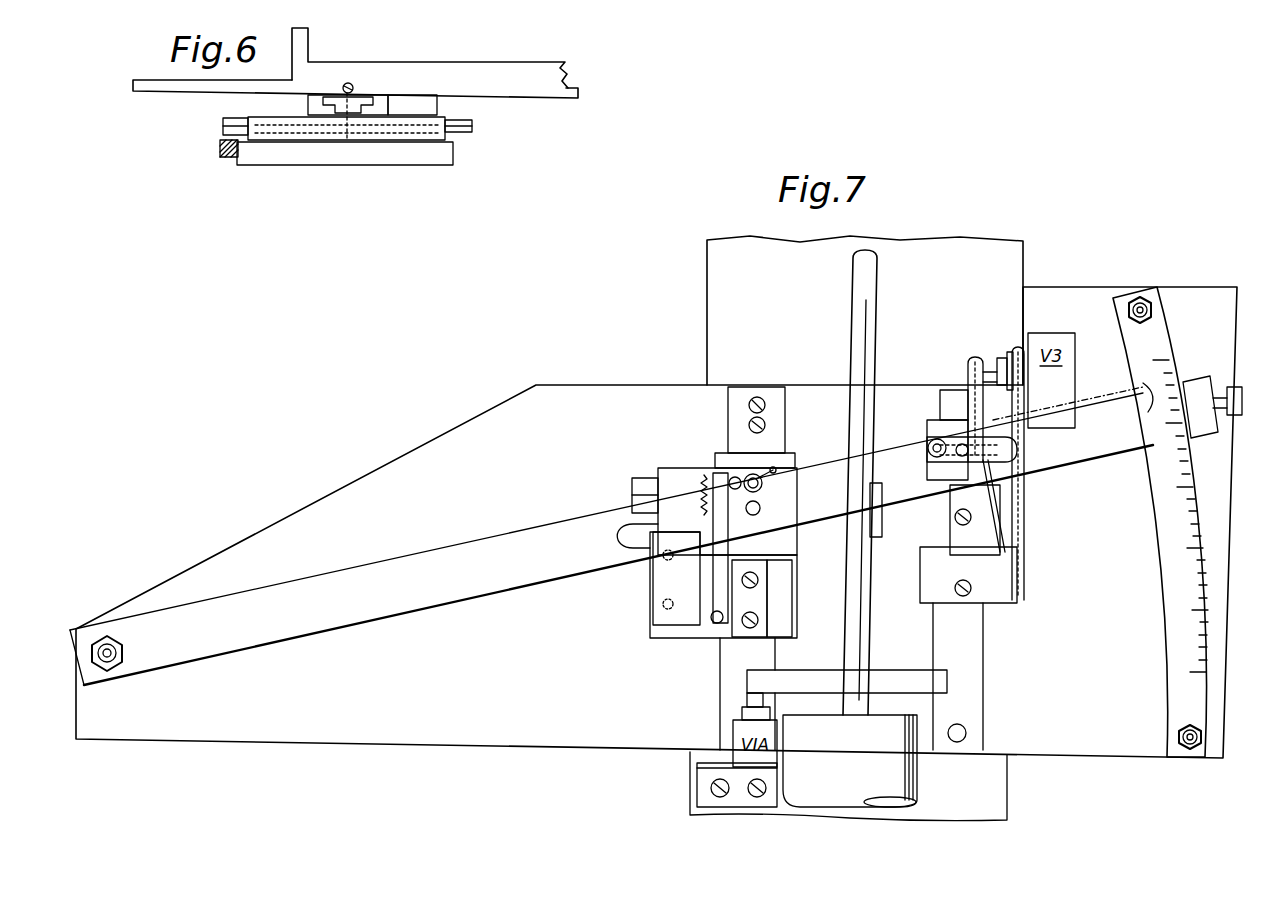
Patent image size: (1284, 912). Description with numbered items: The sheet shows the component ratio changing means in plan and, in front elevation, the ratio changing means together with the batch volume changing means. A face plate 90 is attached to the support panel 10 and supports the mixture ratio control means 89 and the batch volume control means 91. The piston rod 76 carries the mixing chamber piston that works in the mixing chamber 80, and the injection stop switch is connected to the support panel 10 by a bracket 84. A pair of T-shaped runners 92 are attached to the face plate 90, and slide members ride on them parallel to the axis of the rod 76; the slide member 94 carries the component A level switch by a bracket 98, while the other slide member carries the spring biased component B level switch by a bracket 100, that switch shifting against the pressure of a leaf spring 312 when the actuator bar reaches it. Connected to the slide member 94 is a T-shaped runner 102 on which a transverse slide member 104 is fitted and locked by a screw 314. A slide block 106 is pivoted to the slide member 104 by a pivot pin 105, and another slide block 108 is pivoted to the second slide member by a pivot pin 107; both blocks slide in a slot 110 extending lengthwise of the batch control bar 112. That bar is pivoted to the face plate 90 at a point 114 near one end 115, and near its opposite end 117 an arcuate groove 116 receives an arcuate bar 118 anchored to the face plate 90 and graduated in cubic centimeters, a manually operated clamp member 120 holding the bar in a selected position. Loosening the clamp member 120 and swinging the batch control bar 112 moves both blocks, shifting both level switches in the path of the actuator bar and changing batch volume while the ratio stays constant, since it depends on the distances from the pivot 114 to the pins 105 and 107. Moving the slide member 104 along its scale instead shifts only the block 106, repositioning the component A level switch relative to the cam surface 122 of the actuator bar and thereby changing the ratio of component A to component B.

In FIG. 6, the support panel 10 is at (308, 48).
In FIG. 7, the support panel 10 is at (707, 292).
In FIG. 7, the piston rod 76 is at (877, 297).
In FIG. 7, the mixing chamber 80 is at (918, 781).
In FIG. 7, the bracket 84 is at (705, 784).
In FIG. 6, the mixture ratio control means 89 is at (508, 140).
In FIG. 7, the mixture ratio control means 89 is at (723, 368).
In FIG. 6, the face plate 90 is at (163, 92).
In FIG. 7, the face plate 90 is at (524, 462).
In FIG. 7, the batch volume control means 91 is at (822, 370).
In FIG. 6, the T-shaped runners 92 is at (363, 95).
In FIG. 7, the T-shaped runners 92 is at (773, 390).
In FIG. 6, the slide member 94 is at (390, 108).
In FIG. 7, the slide member 94 is at (725, 453).
In FIG. 7, the bracket 98 is at (764, 592).
In FIG. 7, the bracket 100 is at (1017, 580).
In FIG. 6, the T-shaped runner 102 is at (242, 118).
In FIG. 7, the T-shaped runner 102 is at (636, 478).
In FIG. 6, the slide member 104 is at (435, 118).
In FIG. 7, the slide member 104 is at (680, 468).
In FIG. 7, the pivot pin 105 is at (758, 513).
In FIG. 7, the slide block 106 is at (764, 503).
In FIG. 7, the pivot pin 107 is at (955, 463).
In FIG. 7, the slide block 108 is at (930, 458).
In FIG. 6, the slot 110 is at (227, 158).
In FIG. 7, the slot 110 is at (835, 505).
In FIG. 6, the batch control bar 112 is at (380, 158).
In FIG. 7, the batch control bar 112 is at (424, 562).
In FIG. 7, the pivot point 114 is at (107, 638).
In FIG. 7, the end 115 is at (152, 620).
In FIG. 7, the arcuate groove 116 is at (1145, 392).
In FIG. 7, the opposite end 117 is at (1193, 366).
In FIG. 7, the arcuate bar 118 is at (1160, 331).
In FIG. 7, the clamp member 120 is at (1243, 396).
In FIG. 7, the cam surface 122 is at (752, 670).
In FIG. 7, the leaf spring 312 is at (1000, 517).
In FIG. 7, the screw 314 is at (773, 460).